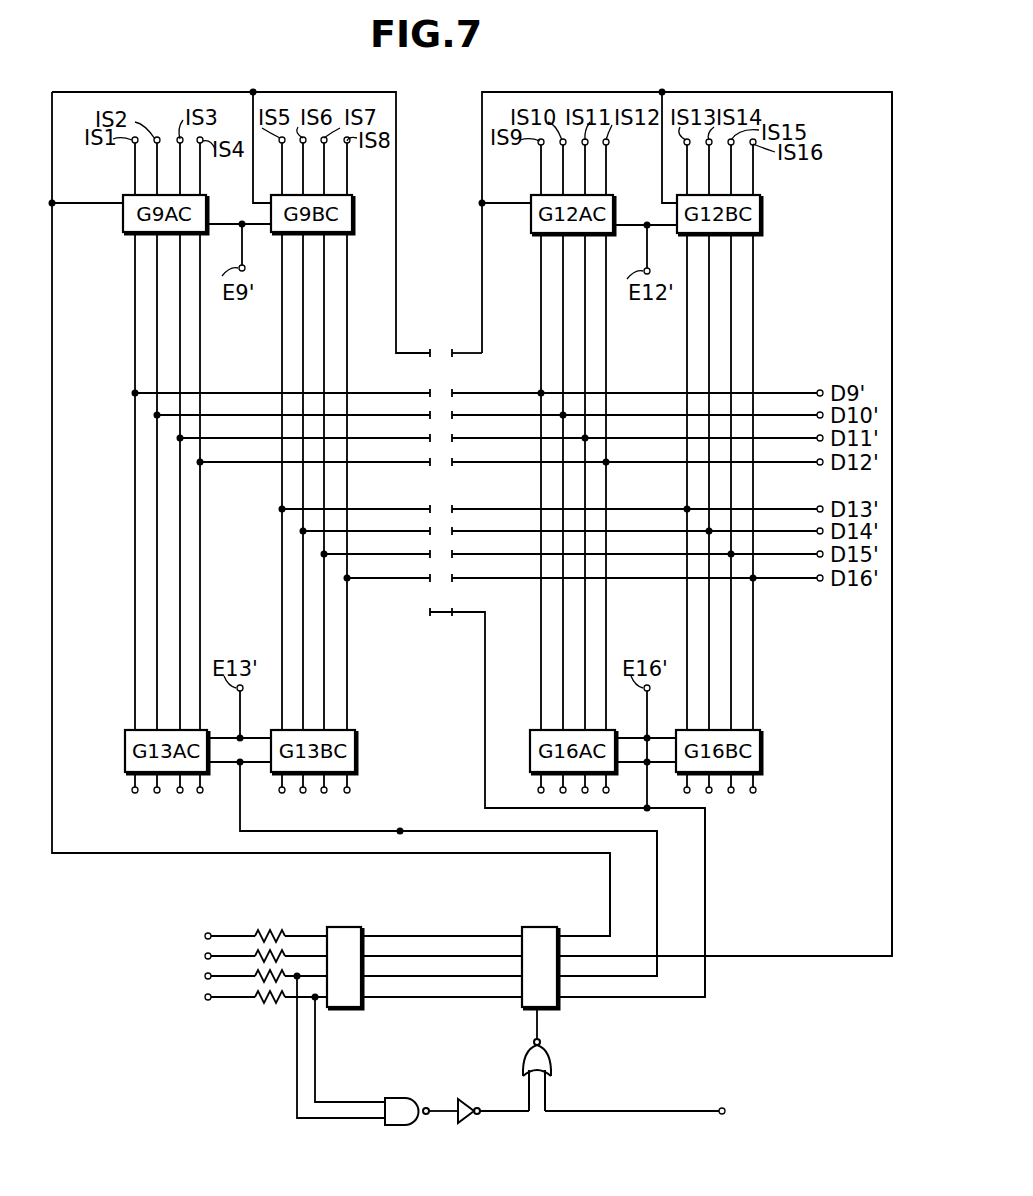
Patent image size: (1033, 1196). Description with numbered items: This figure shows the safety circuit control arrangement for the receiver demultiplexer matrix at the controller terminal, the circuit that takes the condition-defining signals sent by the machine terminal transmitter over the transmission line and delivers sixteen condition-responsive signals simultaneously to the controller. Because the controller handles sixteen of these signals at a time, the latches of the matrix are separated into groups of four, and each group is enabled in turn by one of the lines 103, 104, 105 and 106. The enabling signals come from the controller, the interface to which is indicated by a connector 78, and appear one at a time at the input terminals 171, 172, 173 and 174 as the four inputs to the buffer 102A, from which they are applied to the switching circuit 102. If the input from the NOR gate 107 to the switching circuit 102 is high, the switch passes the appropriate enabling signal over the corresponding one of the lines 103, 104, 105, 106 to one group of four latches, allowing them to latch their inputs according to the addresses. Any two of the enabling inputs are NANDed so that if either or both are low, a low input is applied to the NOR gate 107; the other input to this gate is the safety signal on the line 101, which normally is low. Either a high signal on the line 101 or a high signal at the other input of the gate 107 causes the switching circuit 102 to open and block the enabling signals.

The connector 78 is at (450, 342).
The line 101 is at (665, 1111).
The switching circuit 102 is at (548, 1005).
The buffer 102A is at (350, 1005).
The line 103 is at (585, 936).
The line 104 is at (610, 956).
The line 105 is at (632, 977).
The line 106 is at (672, 998).
The NOR gate 107 is at (552, 1058).
The input terminal 171 is at (222, 937).
The input terminal 172 is at (222, 957).
The input terminal 173 is at (222, 977).
The input terminal 174 is at (222, 998).